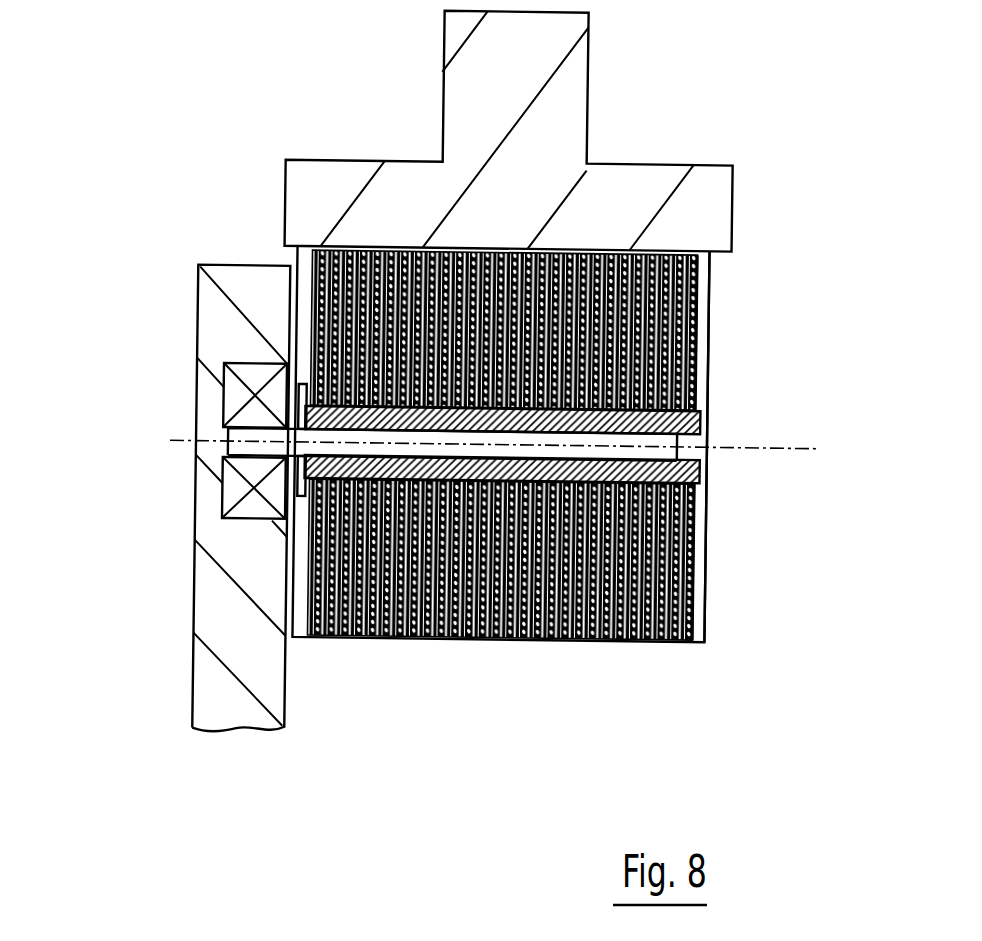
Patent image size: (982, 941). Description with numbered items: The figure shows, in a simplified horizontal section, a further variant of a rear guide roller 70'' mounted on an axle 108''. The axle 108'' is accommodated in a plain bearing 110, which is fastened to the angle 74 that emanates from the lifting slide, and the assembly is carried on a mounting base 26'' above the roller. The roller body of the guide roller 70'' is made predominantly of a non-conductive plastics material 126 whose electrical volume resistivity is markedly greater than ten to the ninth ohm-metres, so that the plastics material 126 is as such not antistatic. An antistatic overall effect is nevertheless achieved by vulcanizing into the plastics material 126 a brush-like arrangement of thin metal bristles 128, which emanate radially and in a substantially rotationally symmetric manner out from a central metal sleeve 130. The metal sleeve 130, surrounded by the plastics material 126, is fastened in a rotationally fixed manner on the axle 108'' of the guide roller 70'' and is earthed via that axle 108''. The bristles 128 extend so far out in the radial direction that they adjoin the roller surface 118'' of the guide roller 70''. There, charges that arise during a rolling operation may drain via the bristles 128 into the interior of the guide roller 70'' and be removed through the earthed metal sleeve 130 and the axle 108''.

The carrier / mounting base 26'' is at (512, 130).
The angle 74 is at (220, 620).
The plain bearing 110 is at (232, 487).
The axle 108'' is at (533, 469).
The central metal sleeve 130 is at (698, 420).
The non-conductive plastics material 126 is at (702, 513).
The metal bristles 128 is at (697, 282).
The roller surface 118'' is at (500, 507).
The rear guide roller 70'' is at (797, 461).